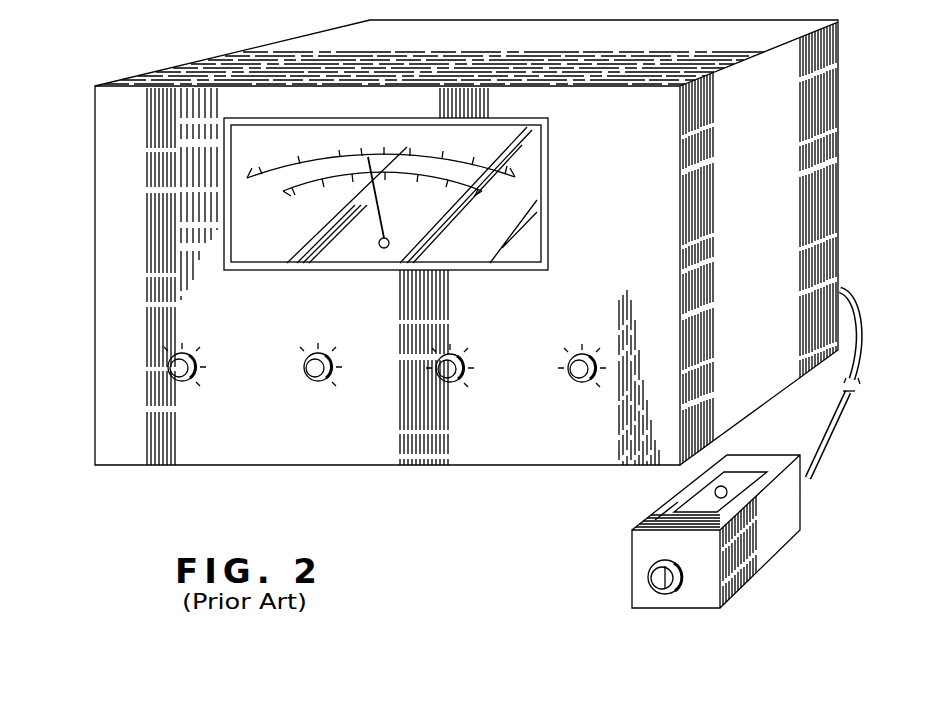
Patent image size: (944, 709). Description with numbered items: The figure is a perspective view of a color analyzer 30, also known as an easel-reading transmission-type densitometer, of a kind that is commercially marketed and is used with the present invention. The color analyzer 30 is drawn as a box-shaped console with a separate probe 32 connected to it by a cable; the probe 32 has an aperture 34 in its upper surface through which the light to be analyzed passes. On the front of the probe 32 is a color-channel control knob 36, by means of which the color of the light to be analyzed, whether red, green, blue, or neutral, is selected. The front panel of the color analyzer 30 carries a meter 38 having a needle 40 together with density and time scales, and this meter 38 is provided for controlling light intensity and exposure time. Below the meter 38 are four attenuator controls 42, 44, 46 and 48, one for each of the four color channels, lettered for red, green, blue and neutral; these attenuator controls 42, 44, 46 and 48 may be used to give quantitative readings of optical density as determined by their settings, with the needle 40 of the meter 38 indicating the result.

The color analyzer 30 is at (49, 213).
The probe 32 is at (778, 530).
The aperture 34 is at (712, 490).
The color-channel control knob 36 is at (655, 585).
The meter 38 is at (240, 183).
The needle 40 is at (377, 228).
The attenuator control 42 is at (165, 370).
The attenuator control 44 is at (297, 369).
The attenuator control 46 is at (445, 386).
The attenuator control 48 is at (568, 385).